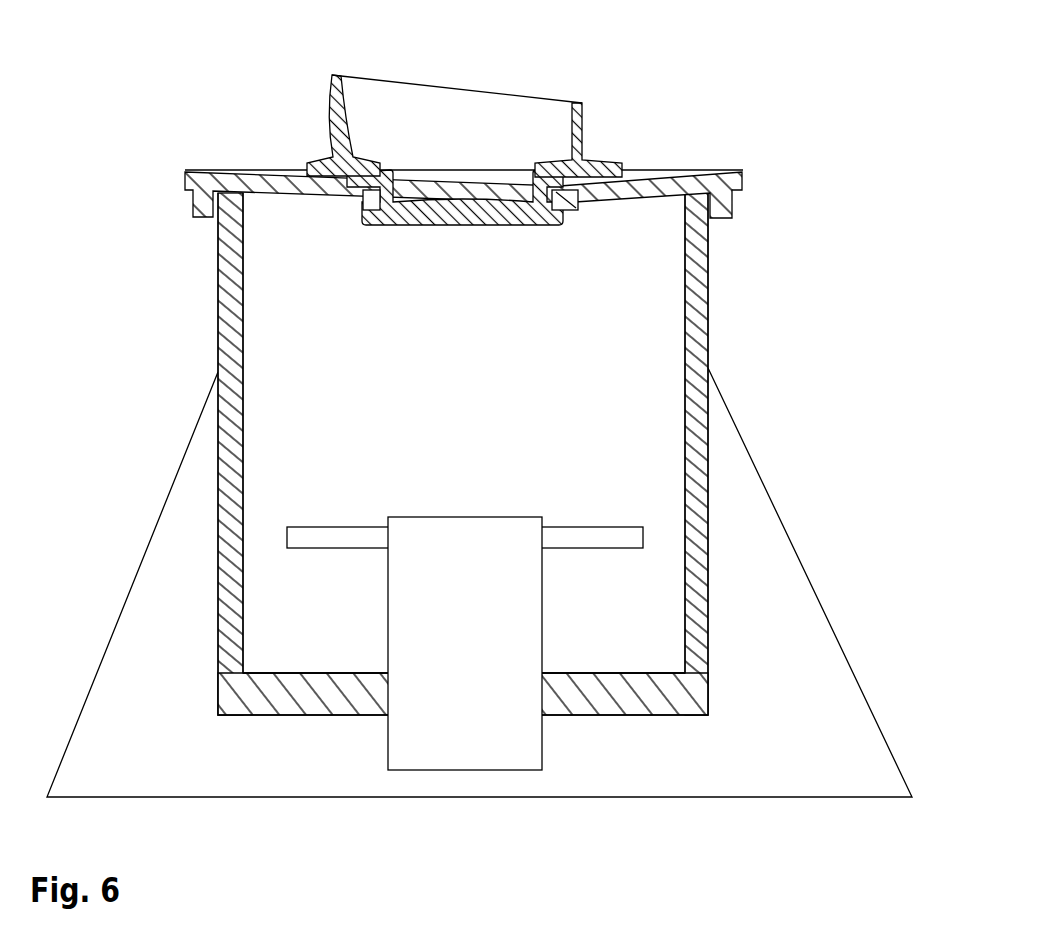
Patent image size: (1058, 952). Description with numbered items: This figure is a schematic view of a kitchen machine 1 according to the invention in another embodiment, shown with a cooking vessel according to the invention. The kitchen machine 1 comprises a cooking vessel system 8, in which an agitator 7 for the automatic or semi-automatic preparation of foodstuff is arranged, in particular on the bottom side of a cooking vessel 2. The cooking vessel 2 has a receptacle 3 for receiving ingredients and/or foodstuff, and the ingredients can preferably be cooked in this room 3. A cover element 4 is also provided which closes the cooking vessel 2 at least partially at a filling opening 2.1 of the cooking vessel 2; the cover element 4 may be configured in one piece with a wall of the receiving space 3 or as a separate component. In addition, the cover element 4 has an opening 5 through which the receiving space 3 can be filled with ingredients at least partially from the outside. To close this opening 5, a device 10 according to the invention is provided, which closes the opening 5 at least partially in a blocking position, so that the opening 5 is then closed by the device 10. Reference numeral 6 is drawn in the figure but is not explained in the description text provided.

The kitchen machine 1 is at (820, 70).
The cooking vessel 2 is at (510, 454).
The filling opening 2.1 is at (429, 306).
The receptacle 3 is at (655, 447).
The cover element 4 is at (658, 177).
The opening 5 is at (567, 213).
The clamping element 6 is at (353, 210).
The agitator 7 is at (465, 547).
The cooking vessel system 8 is at (411, 173).
The device 10 is at (483, 118).